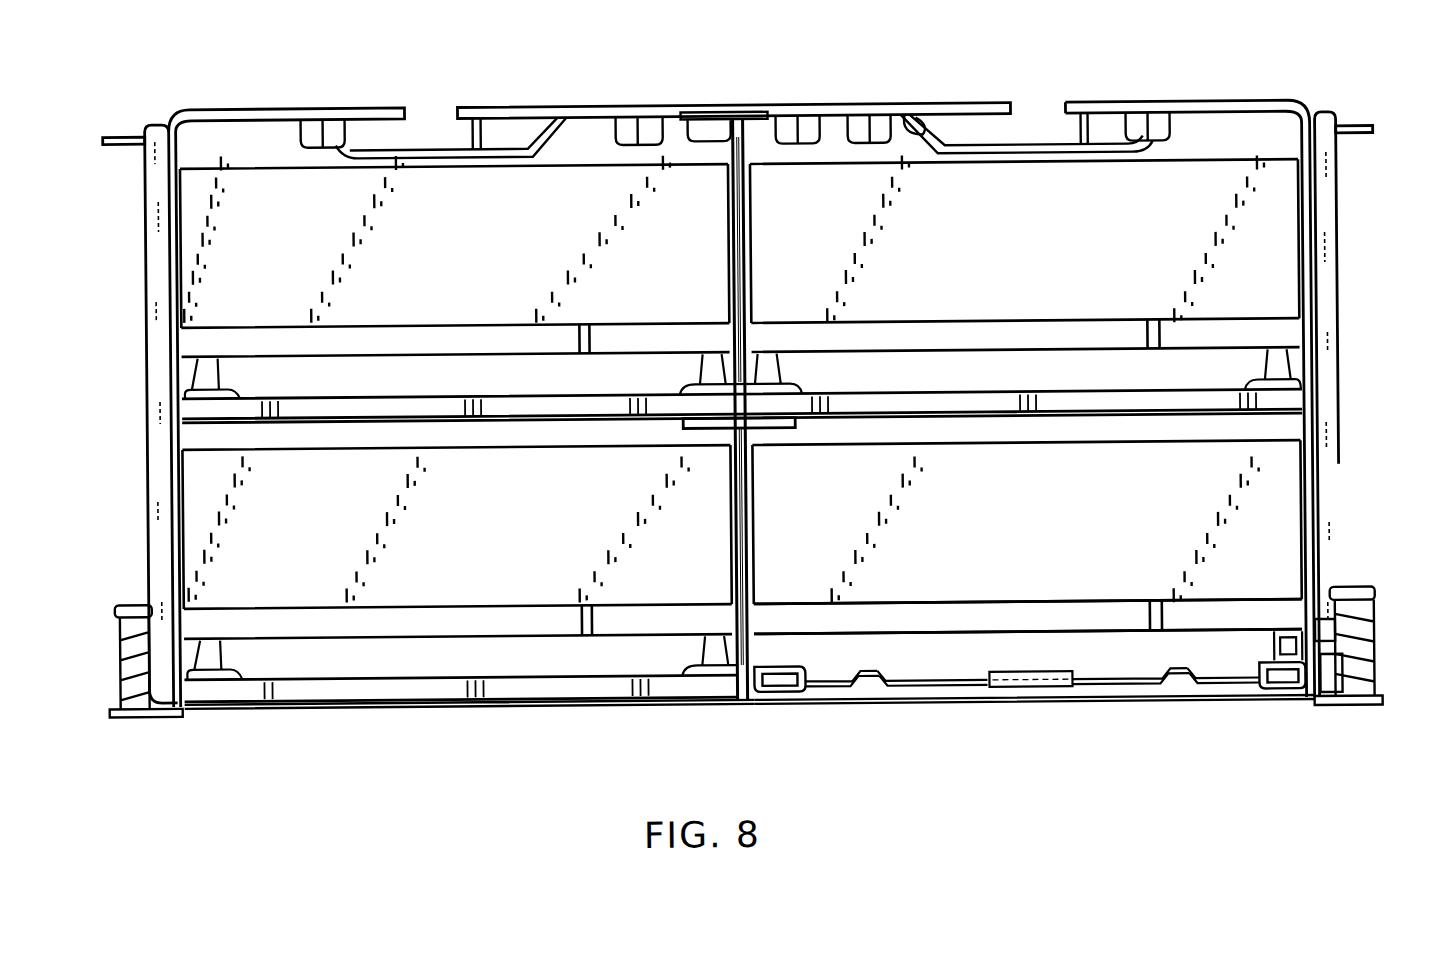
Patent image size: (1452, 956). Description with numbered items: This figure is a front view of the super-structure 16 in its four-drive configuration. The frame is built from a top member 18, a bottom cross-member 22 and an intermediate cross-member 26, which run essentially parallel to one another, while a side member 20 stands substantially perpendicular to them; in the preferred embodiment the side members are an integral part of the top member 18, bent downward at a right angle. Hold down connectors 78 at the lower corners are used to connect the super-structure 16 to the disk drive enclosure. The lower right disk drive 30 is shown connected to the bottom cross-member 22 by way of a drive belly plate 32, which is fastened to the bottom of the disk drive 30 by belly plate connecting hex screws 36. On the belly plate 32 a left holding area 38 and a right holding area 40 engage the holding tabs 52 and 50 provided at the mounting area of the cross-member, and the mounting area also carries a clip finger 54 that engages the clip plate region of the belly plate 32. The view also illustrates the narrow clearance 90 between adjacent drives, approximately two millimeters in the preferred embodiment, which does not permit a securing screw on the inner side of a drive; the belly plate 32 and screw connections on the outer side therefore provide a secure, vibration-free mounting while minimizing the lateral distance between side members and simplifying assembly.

The super-structure 16 is at (460, 708).
The top member 18 is at (910, 114).
The side member 20 is at (1318, 555).
The bottom cross-member 22 is at (810, 705).
The intermediate cross-member 26 is at (912, 403).
The disk drive 30 is at (1003, 607).
The drive belly plate 32 is at (1222, 697).
The hex screws 36 is at (765, 697).
The left holding area 38 is at (857, 685).
The right holding area 40 is at (1200, 695).
The left holding tab 50 is at (1180, 684).
The right holding tab 52 is at (880, 685).
The clip finger 54 is at (1005, 677).
The hold down connectors 78 is at (140, 600).
The narrow clearance 90 is at (741, 510).